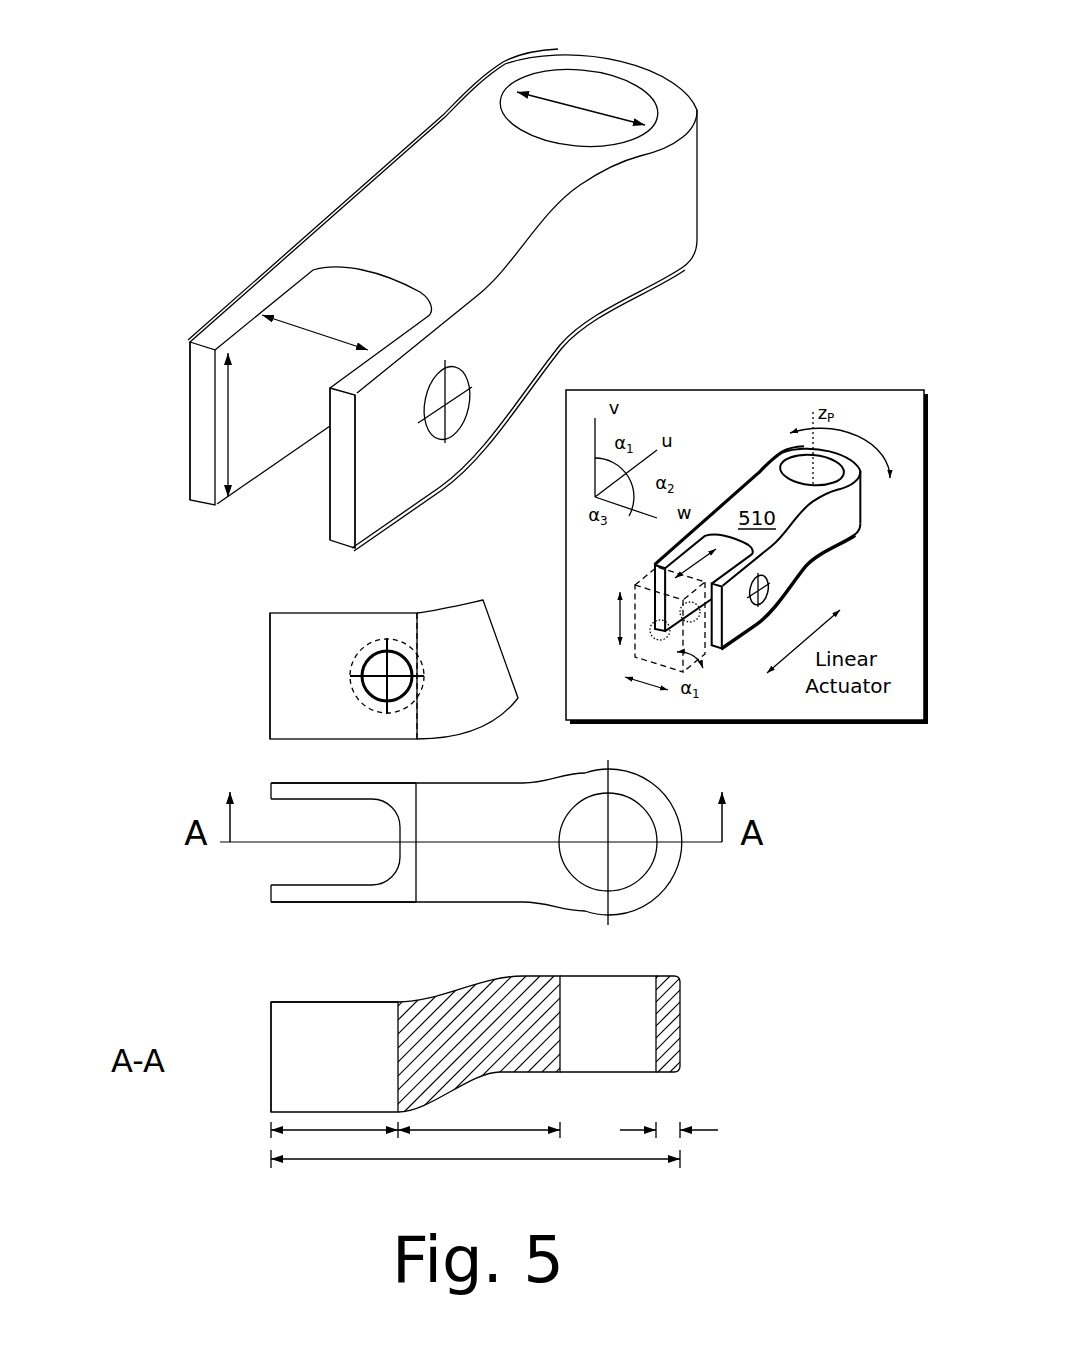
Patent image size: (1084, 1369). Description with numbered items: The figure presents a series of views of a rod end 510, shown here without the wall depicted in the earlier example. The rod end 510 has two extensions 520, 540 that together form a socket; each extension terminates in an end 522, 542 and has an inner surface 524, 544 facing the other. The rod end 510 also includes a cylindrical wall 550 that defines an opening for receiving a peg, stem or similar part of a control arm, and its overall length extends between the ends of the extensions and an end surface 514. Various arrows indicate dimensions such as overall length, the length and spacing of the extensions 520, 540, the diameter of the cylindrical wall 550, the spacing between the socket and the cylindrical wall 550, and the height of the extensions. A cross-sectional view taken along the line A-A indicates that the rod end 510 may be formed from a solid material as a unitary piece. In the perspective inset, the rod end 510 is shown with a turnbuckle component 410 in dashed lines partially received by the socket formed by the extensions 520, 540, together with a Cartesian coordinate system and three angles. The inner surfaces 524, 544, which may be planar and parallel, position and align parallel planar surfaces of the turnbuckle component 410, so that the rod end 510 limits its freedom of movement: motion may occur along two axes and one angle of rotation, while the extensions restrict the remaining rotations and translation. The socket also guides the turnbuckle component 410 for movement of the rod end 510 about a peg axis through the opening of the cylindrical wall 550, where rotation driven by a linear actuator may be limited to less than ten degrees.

The rod end 510 is at (450, 212).
The end surface 514 is at (697, 180).
The extension 520 is at (190, 390).
The end 522 is at (200, 452).
The inner surface 524 is at (245, 396).
The extension 540 is at (415, 480).
The end 542 is at (345, 527).
The inner surface 544 is at (327, 483).
The cylindrical wall 550 is at (643, 82).
The turnbuckle component 410 is at (648, 582).